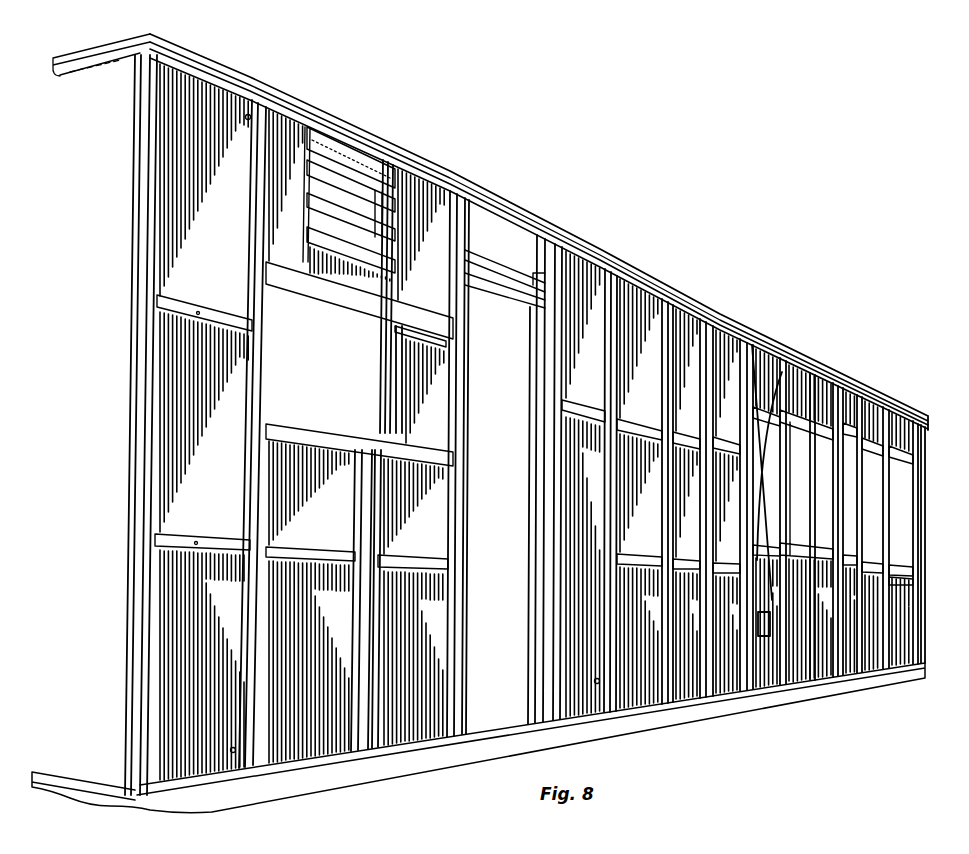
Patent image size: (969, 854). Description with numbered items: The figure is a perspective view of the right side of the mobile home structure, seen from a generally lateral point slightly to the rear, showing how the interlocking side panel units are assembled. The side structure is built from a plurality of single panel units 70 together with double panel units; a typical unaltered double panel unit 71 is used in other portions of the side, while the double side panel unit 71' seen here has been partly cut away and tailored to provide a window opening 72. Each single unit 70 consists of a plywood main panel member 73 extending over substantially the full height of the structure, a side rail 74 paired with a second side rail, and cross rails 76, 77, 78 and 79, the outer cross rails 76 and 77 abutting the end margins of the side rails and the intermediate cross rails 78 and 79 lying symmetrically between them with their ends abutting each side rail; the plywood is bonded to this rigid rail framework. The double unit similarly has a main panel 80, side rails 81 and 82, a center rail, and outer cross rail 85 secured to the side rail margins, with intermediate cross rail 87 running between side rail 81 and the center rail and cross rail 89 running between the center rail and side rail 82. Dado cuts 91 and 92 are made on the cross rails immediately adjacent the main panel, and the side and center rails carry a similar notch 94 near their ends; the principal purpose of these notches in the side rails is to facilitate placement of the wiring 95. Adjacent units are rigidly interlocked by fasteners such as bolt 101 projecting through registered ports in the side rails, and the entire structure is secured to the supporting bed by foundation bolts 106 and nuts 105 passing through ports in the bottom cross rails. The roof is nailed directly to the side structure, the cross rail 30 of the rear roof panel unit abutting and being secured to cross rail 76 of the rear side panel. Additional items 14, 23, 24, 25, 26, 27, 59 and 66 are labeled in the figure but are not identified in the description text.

The wall panel unit 14 is at (280, 222).
The stud 23 is at (290, 100).
The stud 24 is at (358, 132).
The nail 25 is at (236, 438).
The header return 26 is at (110, 92).
The header top plate 27 is at (95, 50).
The cross rail of rear roof panel unit 30 is at (288, 96).
The window girt 59 is at (384, 150).
The header 66 is at (207, 50).
The single panel unit 70 is at (132, 496).
The double panel unit 71 is at (652, 710).
The double side panel unit 71' is at (439, 446).
The window opening 72 is at (346, 376).
The main panel member 73 is at (212, 469).
The side rail 74 is at (136, 407).
The cross rail 76 is at (232, 86).
The cross rail 77 is at (222, 772).
The cross rail 78 is at (178, 291).
The cross rail 79 is at (166, 538).
The main panel 80 is at (306, 667).
The side rail 81 is at (258, 628).
The side rail 82 is at (444, 560).
The cross rail 85 is at (322, 692).
The cross rail 87 is at (332, 545).
The cross rail 89 is at (396, 566).
The dado cut 91 is at (198, 312).
The dado cut 92 is at (196, 542).
The notch 94 is at (228, 720).
The wiring 95 is at (247, 122).
The bolt 101 is at (231, 752).
The nut 105 is at (322, 748).
The foundation bolt 106 is at (312, 748).